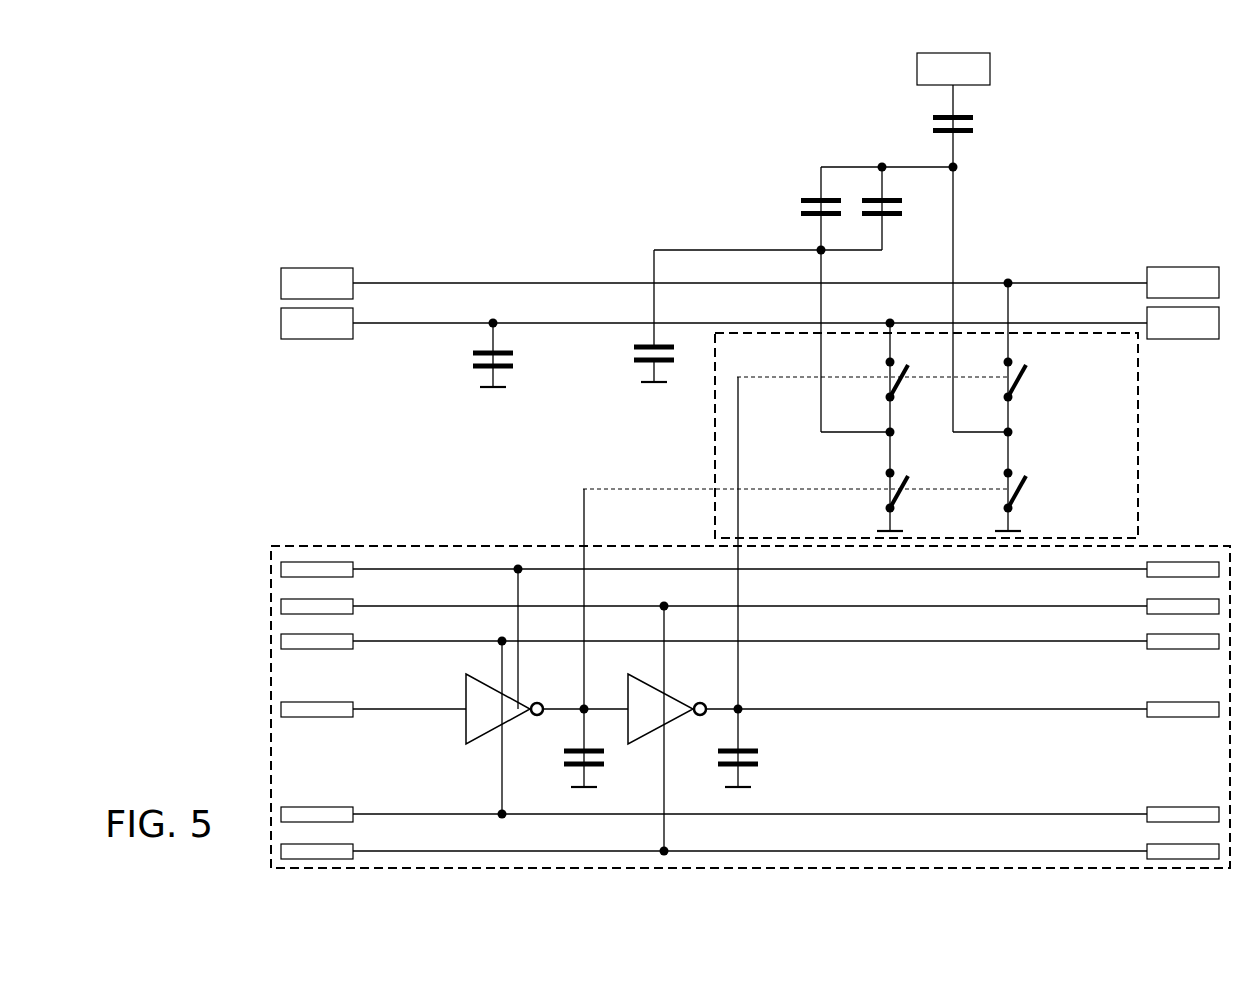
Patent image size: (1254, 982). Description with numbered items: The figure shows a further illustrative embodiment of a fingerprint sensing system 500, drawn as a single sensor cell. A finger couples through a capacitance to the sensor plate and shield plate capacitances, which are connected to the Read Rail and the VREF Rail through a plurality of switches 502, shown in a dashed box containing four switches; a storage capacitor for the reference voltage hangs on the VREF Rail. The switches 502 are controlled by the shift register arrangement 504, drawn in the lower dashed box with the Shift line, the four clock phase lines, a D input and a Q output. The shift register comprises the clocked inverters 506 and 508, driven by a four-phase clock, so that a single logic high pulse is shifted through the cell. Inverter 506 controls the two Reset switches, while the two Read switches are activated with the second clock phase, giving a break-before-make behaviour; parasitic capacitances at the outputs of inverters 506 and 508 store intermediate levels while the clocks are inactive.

The fingerprint sensing system 500 is at (465, 150).
The plurality of switches 502 is at (1138, 423).
The shift register arrangement 504 is at (1160, 545).
The clocked inverter 506 is at (467, 697).
The clocked inverter 508 is at (678, 695).